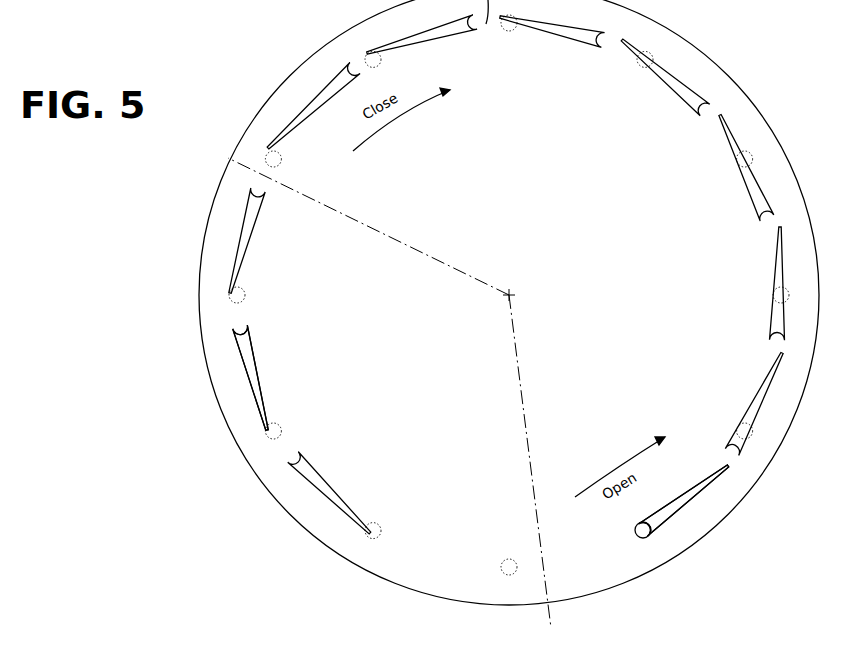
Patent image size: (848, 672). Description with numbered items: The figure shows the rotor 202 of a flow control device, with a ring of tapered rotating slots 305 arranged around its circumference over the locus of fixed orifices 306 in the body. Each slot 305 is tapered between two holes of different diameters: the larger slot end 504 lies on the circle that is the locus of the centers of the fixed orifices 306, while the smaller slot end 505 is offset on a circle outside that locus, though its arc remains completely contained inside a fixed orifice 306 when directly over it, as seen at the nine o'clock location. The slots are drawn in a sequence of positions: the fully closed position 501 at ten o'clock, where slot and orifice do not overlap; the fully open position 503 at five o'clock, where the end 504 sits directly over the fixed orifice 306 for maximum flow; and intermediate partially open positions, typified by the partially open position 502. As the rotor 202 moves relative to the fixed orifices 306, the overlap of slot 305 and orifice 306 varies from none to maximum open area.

The rotor 202 is at (268, 458).
The rotating slot 305 is at (246, 221).
The fixed orifice 306 is at (772, 305).
The fully closed position 501 is at (317, 100).
The partially open position 502 is at (247, 380).
The fully open position 503 is at (700, 493).
The slot end 504 is at (233, 322).
The slot end 505 is at (263, 147).